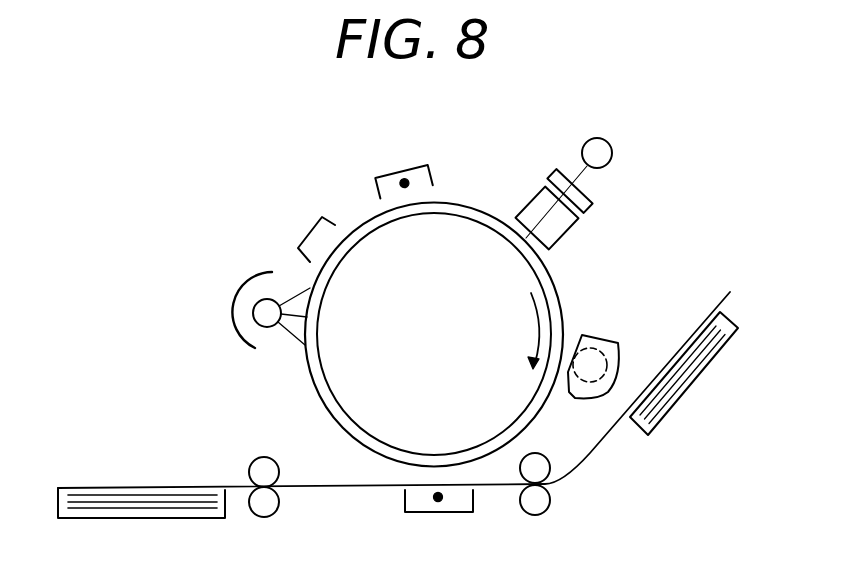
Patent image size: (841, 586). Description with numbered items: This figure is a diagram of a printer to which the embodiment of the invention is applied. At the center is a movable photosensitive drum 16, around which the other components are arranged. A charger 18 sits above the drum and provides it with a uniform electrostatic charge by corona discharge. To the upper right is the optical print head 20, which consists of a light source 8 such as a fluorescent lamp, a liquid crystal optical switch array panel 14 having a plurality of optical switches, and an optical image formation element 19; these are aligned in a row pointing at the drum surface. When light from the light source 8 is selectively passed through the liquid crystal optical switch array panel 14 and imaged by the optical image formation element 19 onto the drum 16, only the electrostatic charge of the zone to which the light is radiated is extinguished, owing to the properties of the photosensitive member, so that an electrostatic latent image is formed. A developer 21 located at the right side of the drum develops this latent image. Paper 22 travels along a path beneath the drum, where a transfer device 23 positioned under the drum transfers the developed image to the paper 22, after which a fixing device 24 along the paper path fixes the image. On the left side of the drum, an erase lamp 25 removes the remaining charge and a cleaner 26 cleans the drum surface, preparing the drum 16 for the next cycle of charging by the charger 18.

The light source 8 is at (612, 153).
The liquid crystal optical switch array panel 14 is at (588, 205).
The photosensitive drum 16 is at (469, 241).
The charger 18 is at (400, 170).
The optical image formation element 19 is at (573, 229).
The optical print head 20 is at (700, 148).
The developer 21 is at (602, 335).
The paper 22 is at (604, 440).
The transfer device 23 is at (428, 512).
The fixing device 24 is at (262, 457).
The erase lamp 25 is at (234, 300).
The cleaner 26 is at (303, 238).